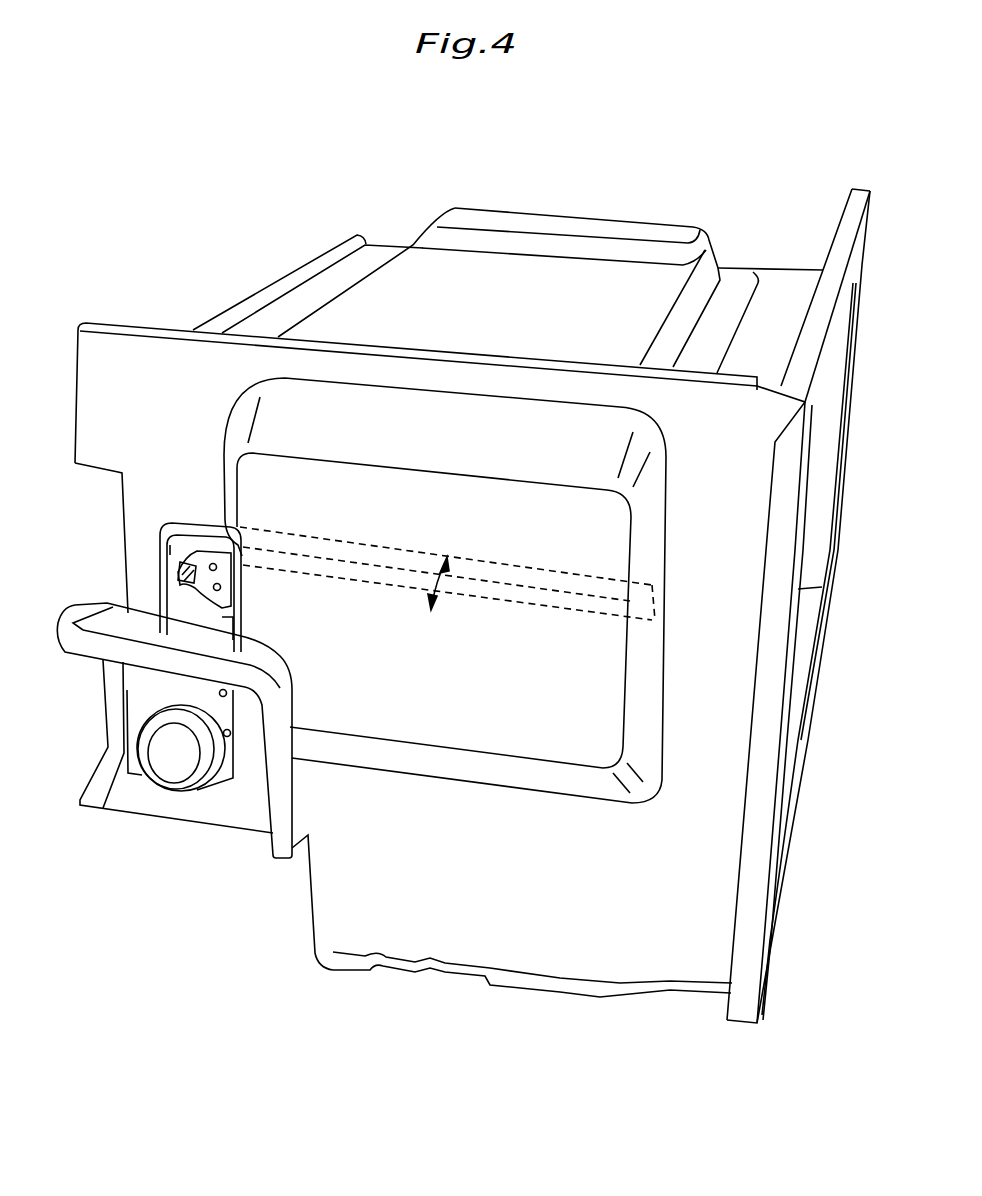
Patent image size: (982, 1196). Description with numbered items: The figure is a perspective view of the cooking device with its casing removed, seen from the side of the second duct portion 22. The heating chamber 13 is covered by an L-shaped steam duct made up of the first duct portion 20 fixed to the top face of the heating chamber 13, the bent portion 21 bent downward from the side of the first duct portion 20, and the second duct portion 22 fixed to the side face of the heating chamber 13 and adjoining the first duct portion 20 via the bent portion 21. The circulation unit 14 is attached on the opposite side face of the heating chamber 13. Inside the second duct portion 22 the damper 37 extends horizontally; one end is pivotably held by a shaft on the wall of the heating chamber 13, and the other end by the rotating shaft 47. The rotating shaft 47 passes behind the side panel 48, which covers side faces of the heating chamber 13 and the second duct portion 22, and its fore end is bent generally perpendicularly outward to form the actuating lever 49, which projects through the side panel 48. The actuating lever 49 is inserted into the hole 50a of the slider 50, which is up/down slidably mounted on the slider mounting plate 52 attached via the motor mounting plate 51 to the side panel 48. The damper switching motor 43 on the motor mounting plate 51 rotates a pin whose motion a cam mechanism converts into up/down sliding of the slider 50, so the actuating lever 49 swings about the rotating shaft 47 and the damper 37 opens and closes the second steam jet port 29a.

The heating chamber 13 is at (783, 280).
The circulation unit 14 is at (648, 214).
The first duct portion 20 is at (413, 257).
The bent portion 21 is at (240, 423).
The second duct portion 22 is at (643, 530).
The second steam jet port 29a is at (412, 557).
The damper 37 is at (262, 530).
The damper switching motor 43 is at (167, 770).
The rotating shaft 47 is at (195, 558).
The side panel 48 is at (128, 323).
The actuating lever 49 is at (178, 578).
The slider 50 is at (222, 583).
The hole 50a is at (163, 525).
The motor mounting plate 51 is at (223, 810).
The slider mounting plate 52 is at (223, 623).